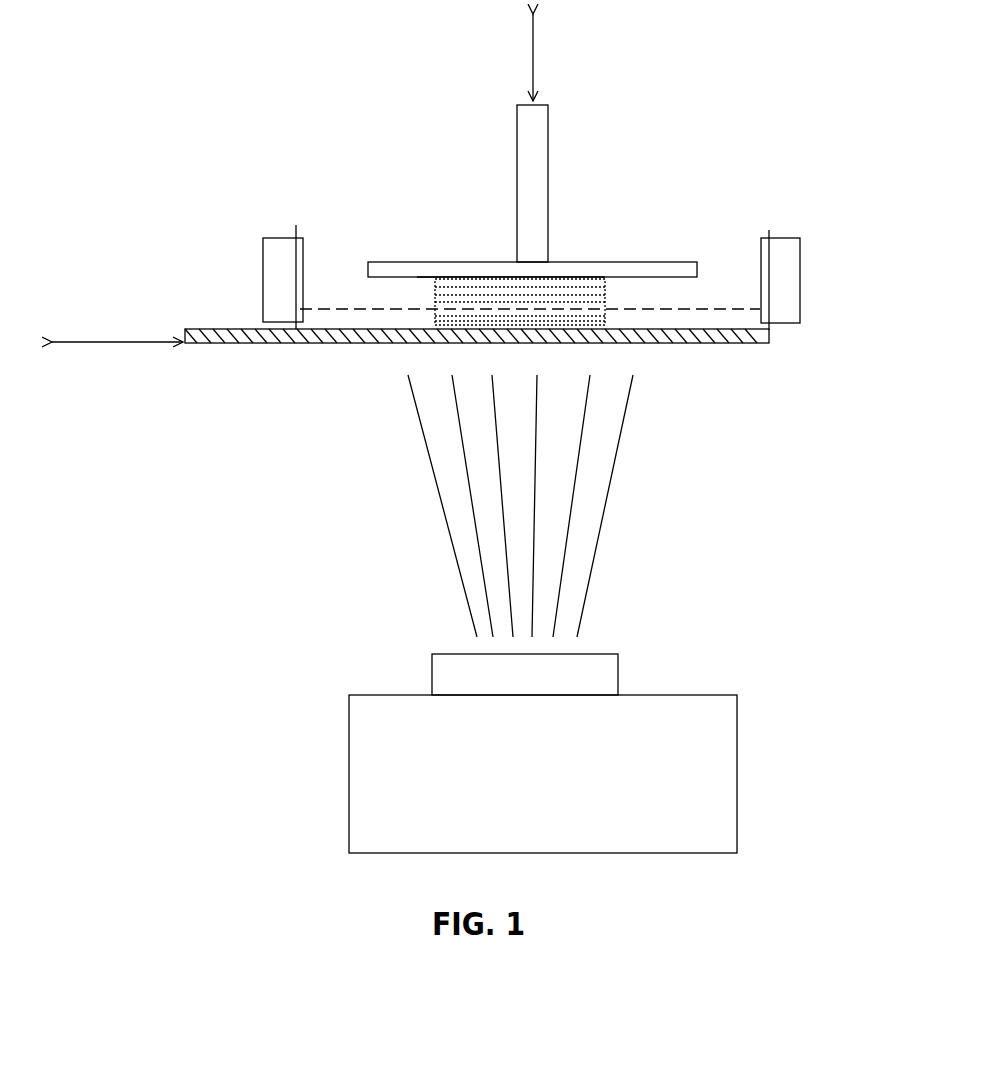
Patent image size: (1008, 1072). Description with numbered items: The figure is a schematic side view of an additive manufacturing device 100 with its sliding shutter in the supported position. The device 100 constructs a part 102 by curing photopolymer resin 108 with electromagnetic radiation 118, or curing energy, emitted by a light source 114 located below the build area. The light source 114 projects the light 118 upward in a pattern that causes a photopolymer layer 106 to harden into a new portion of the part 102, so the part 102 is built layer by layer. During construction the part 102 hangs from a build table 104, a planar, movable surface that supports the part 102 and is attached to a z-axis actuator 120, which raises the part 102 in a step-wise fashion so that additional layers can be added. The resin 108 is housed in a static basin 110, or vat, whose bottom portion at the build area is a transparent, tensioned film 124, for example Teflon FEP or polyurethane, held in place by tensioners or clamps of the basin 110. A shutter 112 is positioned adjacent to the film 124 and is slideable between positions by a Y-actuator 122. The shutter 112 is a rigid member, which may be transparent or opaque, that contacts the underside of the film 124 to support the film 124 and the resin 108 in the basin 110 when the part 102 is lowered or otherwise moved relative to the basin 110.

The additive manufacturing device 100 is at (762, 610).
The part 102 is at (422, 327).
The build table 104 is at (577, 256).
The photopolymer layer 106 is at (600, 325).
The photopolymer resin 108 is at (710, 313).
The basin 110 is at (793, 242).
The shutter 112 is at (330, 343).
The light source 114 is at (718, 718).
The electromagnetic radiation 118 is at (560, 548).
The z-axis actuator 120 is at (534, 46).
The Y-actuator 122 is at (76, 342).
The tensioned film 124 is at (742, 328).